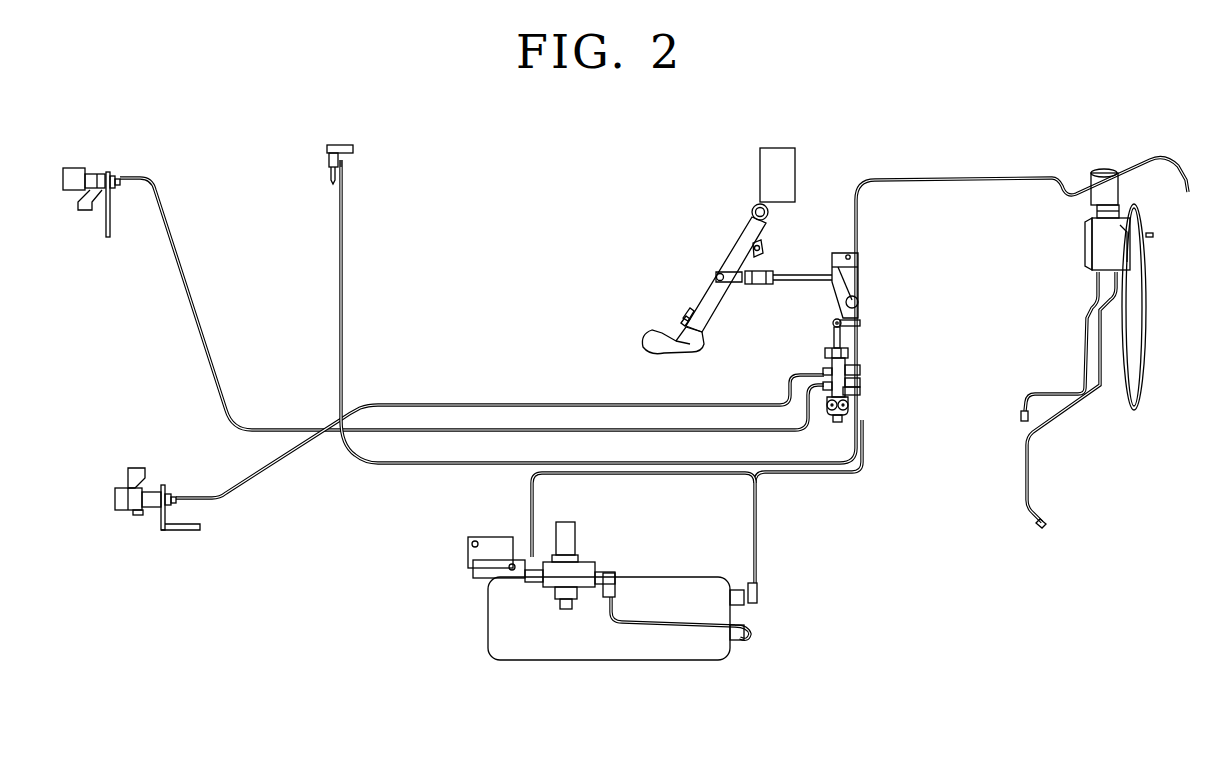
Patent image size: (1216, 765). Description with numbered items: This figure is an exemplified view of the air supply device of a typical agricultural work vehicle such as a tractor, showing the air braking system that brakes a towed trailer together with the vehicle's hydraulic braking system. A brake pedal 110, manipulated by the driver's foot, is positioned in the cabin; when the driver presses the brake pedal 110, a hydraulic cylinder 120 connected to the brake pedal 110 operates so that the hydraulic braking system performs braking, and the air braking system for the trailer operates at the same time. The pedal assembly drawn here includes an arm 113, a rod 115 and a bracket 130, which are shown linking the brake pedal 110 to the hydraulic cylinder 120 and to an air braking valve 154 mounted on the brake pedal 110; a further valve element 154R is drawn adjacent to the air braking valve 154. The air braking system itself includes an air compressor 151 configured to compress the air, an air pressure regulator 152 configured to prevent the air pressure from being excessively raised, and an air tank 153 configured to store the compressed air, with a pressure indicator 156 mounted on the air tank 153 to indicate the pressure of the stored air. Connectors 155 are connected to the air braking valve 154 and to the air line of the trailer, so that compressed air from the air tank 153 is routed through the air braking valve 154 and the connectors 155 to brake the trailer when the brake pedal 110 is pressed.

The brake pedal 110 is at (640, 342).
The pedal arm 113 is at (745, 252).
The push rod 115 is at (792, 283).
The hydraulic cylinder 120 is at (760, 183).
The mounting bracket 130 is at (858, 312).
The air compressor 151 is at (1085, 252).
The air pressure regulator 152 is at (592, 564).
The air tank 153 is at (653, 668).
The air braking valve 154 is at (863, 393).
The rear hydraulic distribution block 154R is at (848, 342).
The connectors 155 is at (94, 168).
The pressure indicator 156 is at (336, 145).